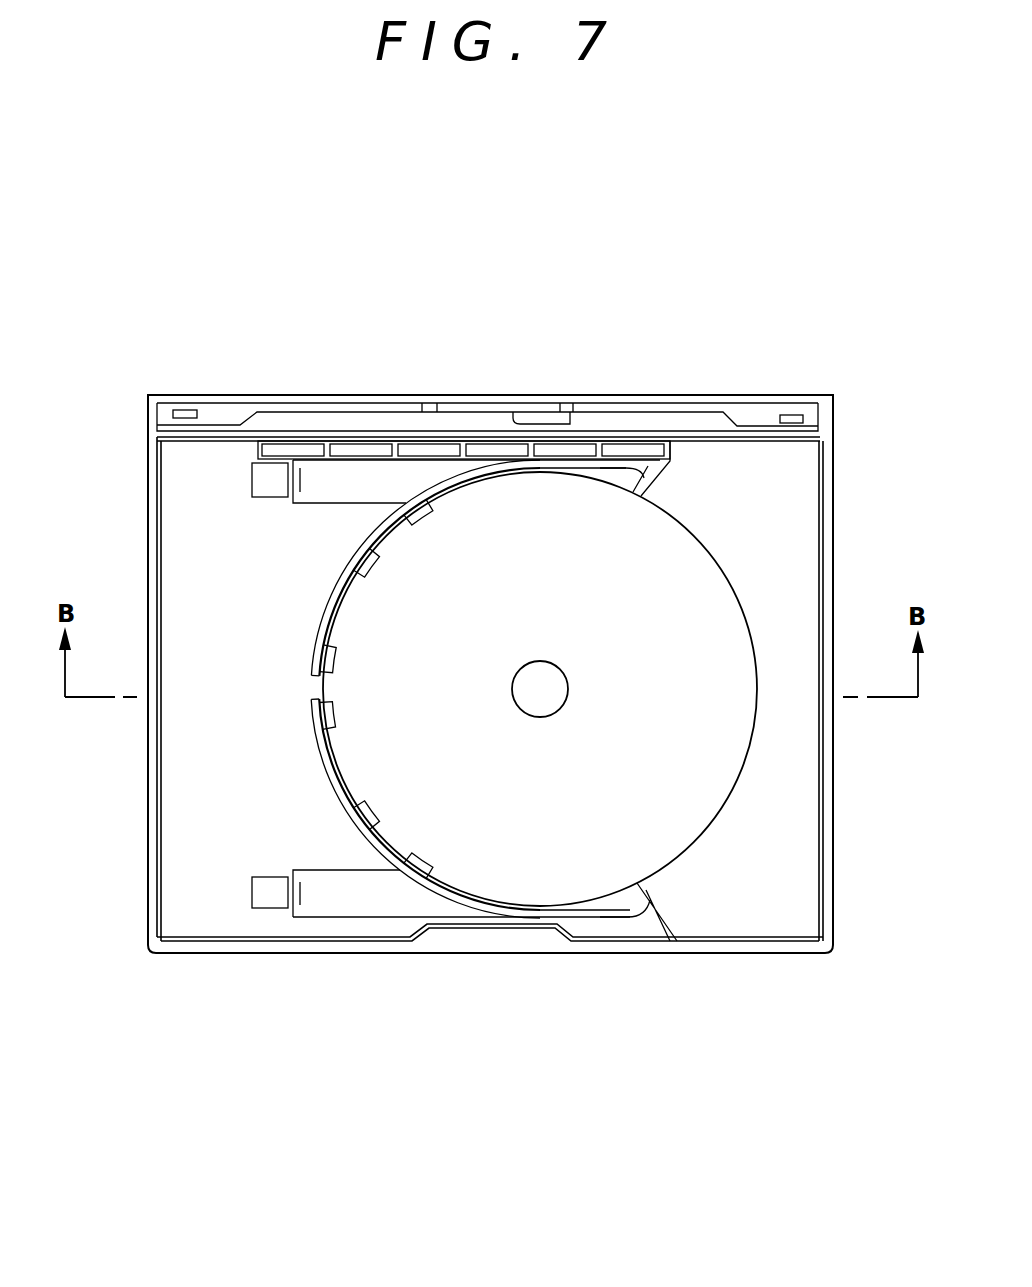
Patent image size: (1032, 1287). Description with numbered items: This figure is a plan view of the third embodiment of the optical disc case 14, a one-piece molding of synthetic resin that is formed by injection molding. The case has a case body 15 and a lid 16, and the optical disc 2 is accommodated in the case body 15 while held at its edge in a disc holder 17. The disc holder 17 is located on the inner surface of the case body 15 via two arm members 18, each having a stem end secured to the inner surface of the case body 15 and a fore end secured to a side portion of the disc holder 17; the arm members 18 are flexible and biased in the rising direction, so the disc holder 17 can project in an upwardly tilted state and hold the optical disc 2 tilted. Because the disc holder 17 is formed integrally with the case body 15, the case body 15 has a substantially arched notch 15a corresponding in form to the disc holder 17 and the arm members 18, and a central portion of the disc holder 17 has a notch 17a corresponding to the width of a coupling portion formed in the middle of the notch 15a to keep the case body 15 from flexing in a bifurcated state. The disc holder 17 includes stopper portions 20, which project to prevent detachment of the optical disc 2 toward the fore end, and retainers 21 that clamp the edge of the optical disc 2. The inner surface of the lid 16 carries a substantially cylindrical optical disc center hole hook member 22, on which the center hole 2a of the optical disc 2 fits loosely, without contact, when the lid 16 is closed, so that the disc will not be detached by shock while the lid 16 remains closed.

The optical disc 2 is at (698, 810).
The center hole 2a is at (557, 690).
The optical disc case 14 is at (745, 343).
The case body 15 is at (807, 903).
The notch 15a is at (323, 758).
The lid 16 is at (197, 394).
The disc holder 17 is at (465, 893).
The notch 17a is at (302, 691).
The arm members 18 is at (348, 478).
The stopper portions 20 is at (625, 477).
The retainers 21 is at (373, 543).
The optical disc center hole hook member 22 is at (512, 413).